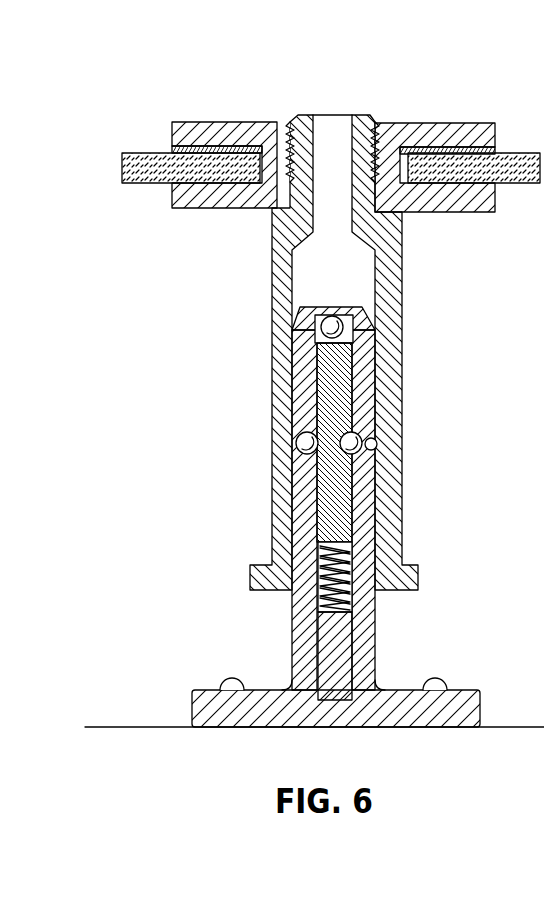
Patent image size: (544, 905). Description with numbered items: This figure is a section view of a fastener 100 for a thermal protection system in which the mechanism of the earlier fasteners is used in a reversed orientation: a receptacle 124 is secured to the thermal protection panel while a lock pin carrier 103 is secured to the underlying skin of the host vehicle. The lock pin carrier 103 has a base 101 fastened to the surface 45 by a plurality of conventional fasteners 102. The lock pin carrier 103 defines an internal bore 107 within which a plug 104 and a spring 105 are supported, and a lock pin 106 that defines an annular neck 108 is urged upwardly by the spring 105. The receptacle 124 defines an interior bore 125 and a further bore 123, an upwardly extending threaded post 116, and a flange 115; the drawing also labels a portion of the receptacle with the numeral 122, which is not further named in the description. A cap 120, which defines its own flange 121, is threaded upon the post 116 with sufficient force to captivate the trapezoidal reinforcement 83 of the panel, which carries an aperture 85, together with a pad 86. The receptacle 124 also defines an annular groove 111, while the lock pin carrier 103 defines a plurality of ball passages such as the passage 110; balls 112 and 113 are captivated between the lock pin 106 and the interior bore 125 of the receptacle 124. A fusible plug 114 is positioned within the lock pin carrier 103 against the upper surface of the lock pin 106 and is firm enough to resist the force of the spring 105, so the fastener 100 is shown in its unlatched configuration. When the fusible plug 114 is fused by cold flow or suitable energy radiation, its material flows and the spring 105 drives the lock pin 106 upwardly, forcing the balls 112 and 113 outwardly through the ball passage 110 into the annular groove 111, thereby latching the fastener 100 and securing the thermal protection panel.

The surface 45 is at (114, 727).
The trapezoidal reinforcement portion 83 is at (140, 183).
The aperture 85 is at (280, 125).
The pad 86 is at (138, 147).
The fastener 100 is at (425, 447).
The base 101 is at (395, 690).
The conventional fasteners 102 is at (445, 683).
The lock pin carrier 103 is at (378, 620).
The plug 104 is at (328, 652).
The spring 105 is at (320, 600).
The lock pin 106 is at (325, 502).
The internal bore 107 is at (325, 497).
The annular neck 108 is at (345, 398).
The ball passage 110 is at (368, 462).
The annular groove 111 is at (372, 452).
The ball 112 is at (372, 440).
The ball 113 is at (298, 443).
The fusible plug 114 is at (302, 343).
The flange 115 is at (198, 208).
The threaded post 116 is at (362, 120).
The cap 120 is at (258, 112).
The flange 121 is at (200, 122).
The right clamp block 122 is at (265, 210).
The bore 123 is at (332, 132).
The receptacle 124 is at (403, 253).
The interior bore 125 is at (365, 297).